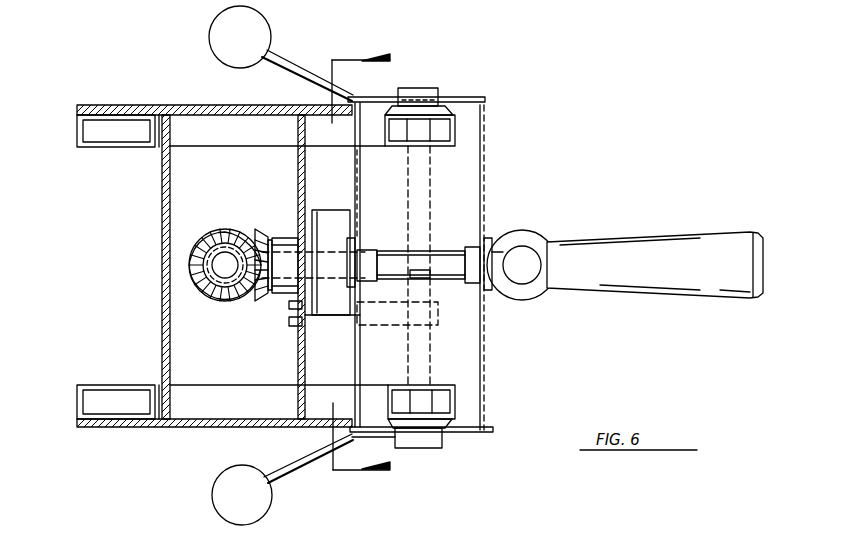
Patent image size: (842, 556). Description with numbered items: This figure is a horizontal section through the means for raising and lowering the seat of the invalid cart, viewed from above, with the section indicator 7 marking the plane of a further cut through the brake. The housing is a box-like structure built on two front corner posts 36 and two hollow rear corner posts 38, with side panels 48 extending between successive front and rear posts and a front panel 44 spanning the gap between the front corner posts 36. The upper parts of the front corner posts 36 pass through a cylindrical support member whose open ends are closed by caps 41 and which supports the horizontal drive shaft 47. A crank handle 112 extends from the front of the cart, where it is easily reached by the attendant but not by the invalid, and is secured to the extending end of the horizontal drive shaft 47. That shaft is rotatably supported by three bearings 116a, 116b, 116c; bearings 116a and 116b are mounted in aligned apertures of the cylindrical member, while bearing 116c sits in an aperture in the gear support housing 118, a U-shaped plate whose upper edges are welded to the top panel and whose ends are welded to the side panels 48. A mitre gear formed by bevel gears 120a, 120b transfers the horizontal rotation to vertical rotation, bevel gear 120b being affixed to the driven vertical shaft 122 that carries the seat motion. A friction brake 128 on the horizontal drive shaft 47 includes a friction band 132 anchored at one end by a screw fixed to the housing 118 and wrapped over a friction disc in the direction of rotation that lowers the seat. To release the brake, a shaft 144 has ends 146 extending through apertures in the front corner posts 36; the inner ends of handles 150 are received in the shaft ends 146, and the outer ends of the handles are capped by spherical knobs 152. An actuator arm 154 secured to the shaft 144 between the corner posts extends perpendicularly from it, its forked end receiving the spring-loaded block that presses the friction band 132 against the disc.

The section line 7- 7 is at (361, 266).
The front corner posts 36 is at (453, 129).
The rear corner posts 38 is at (77, 147).
The caps 41 is at (482, 97).
The front panel 44 is at (486, 178).
The horizontal drive shaft 47 is at (420, 266).
The side panels 48 is at (192, 104).
The crank handle 112 is at (648, 248).
The bearing 116a is at (473, 247).
The bearing 116b is at (373, 251).
The bearing 116c is at (306, 228).
The gear support housing 118 is at (163, 318).
The bevel gear 120a is at (262, 232).
The bevel gear 120b is at (220, 228).
The driven vertical shaft 122 is at (228, 270).
The friction brake 128 is at (331, 210).
The friction band 132 is at (344, 304).
The shaft 144 is at (440, 356).
The shaft ends 146 is at (428, 89).
The handles 150 is at (290, 57).
The spherical knobs 152 is at (254, 47).
The actuator arm 154 is at (328, 325).